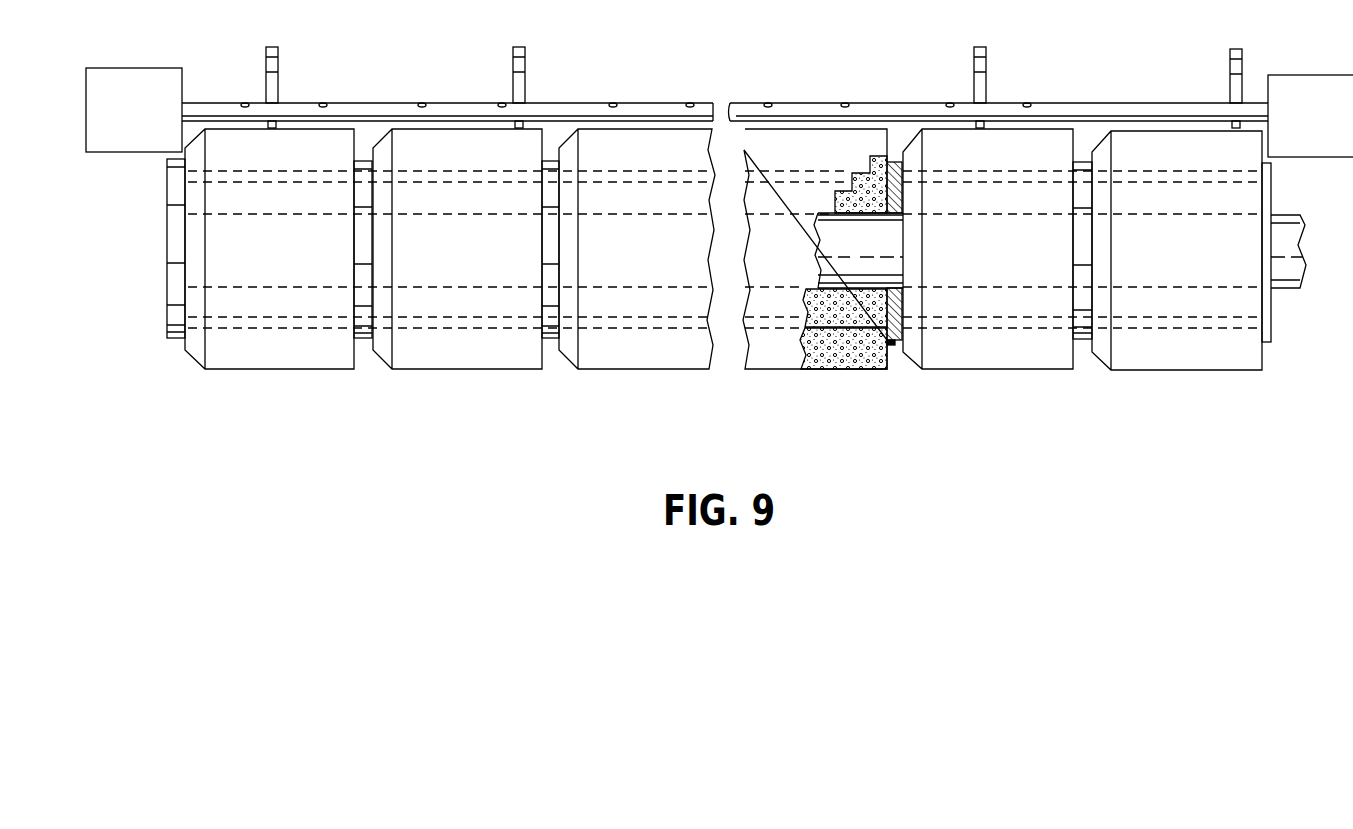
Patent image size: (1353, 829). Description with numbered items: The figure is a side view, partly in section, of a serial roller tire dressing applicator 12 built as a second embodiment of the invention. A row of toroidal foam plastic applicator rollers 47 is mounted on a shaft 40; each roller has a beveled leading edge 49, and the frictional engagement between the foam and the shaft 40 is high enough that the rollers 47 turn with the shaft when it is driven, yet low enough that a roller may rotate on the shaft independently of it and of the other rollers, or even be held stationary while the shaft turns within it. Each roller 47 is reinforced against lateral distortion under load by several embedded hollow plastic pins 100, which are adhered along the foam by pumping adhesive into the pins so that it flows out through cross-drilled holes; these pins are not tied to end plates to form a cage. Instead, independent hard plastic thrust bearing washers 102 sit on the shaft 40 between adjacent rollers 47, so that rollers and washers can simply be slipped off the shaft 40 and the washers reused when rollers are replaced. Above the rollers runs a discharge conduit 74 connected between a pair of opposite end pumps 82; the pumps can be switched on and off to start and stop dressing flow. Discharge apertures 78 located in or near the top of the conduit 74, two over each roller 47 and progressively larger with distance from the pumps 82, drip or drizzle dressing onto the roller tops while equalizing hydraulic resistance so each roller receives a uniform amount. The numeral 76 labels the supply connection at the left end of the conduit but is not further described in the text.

The applicator 12 is at (418, 376).
The shaft 40 is at (1277, 216).
The applicator roller 47 is at (243, 358).
The leading edge 49 is at (192, 358).
The discharge conduit 74 is at (368, 103).
The supply line 76 is at (232, 103).
The discharge aperture 78 is at (1020, 103).
The pump 82 is at (132, 68).
The hollow plastic pin 100 is at (630, 170).
The thrust bearing washer 102 is at (892, 334).